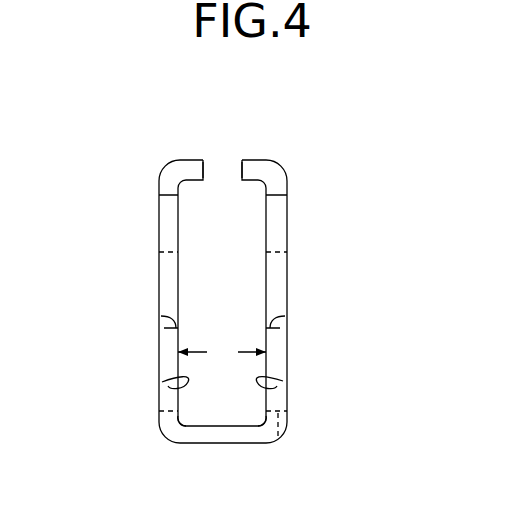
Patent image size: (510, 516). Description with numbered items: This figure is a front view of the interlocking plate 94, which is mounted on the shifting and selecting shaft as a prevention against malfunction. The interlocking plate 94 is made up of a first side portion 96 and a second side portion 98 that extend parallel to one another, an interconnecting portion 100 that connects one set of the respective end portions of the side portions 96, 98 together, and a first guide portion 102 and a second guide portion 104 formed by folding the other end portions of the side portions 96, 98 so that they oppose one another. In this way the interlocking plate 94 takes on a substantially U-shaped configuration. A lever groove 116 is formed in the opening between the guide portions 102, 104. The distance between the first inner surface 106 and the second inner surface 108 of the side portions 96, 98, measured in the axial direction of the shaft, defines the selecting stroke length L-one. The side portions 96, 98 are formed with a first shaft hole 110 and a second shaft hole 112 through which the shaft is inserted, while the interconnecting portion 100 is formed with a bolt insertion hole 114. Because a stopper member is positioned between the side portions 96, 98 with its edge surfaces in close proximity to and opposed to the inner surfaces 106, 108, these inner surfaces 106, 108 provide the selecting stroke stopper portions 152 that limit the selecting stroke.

The interlocking plate 94 is at (318, 181).
The first side portion 96 is at (286, 228).
The second side portion 98 is at (160, 223).
The interconnecting portion 100 is at (186, 445).
The first guide portion 102 is at (258, 166).
The second guide portion 104 is at (186, 168).
The first inner surface 106 is at (283, 381).
The second inner surface 108 is at (162, 382).
The first shaft hole 110 is at (287, 316).
The second shaft hole 112 is at (159, 317).
The bolt insertion hole 114 is at (283, 444).
The lever groove 116 is at (216, 170).
The selecting stroke stopper portions 152 is at (266, 405).